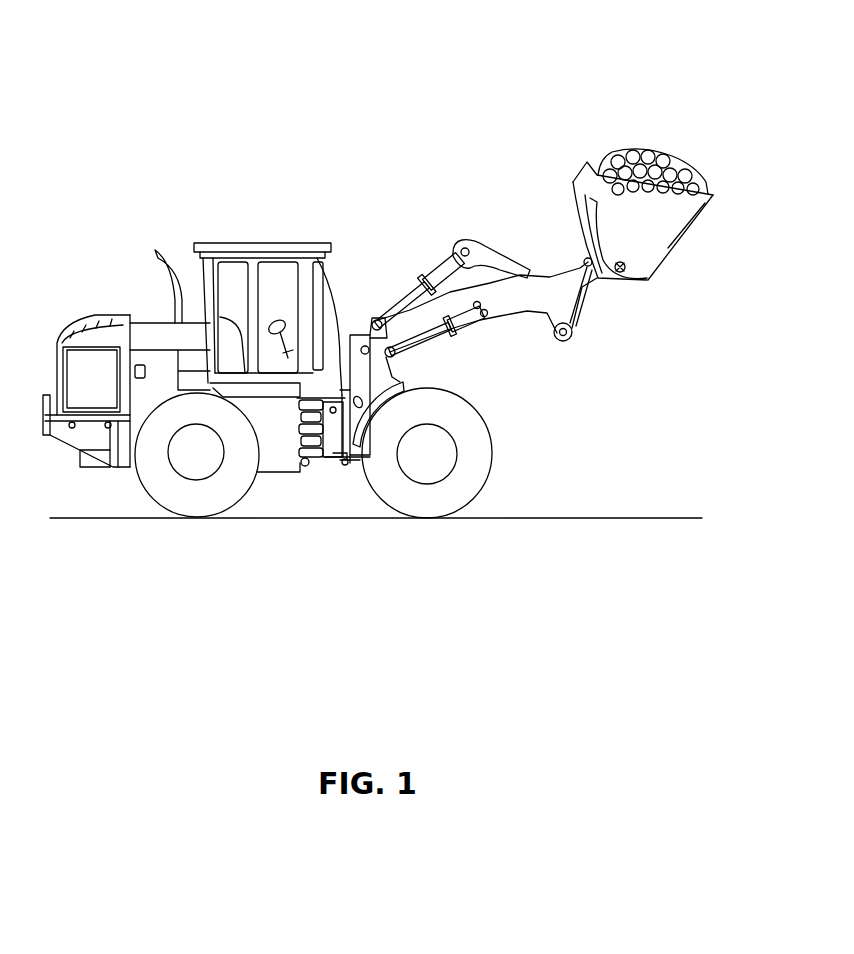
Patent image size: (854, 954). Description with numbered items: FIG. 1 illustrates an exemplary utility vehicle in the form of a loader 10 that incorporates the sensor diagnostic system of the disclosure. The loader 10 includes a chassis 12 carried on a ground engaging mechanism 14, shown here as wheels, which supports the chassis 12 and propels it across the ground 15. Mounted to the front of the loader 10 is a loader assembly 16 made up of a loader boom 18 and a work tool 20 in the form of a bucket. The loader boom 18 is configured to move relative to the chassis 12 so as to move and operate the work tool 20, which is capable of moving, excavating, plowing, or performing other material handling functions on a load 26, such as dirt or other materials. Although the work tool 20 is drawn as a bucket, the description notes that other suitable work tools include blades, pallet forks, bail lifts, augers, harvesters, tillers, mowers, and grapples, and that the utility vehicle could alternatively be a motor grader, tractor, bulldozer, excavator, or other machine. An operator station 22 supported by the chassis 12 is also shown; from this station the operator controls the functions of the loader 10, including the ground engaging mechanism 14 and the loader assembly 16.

The loader 10 is at (386, 119).
The chassis 12 is at (268, 458).
The ground engaging mechanism 14 is at (192, 505).
The ground 15 is at (620, 519).
The loader assembly 16 is at (572, 349).
The loader boom 18 is at (485, 253).
The work tool 20 is at (668, 232).
The operator station 22 is at (282, 275).
The load 26 is at (641, 162).